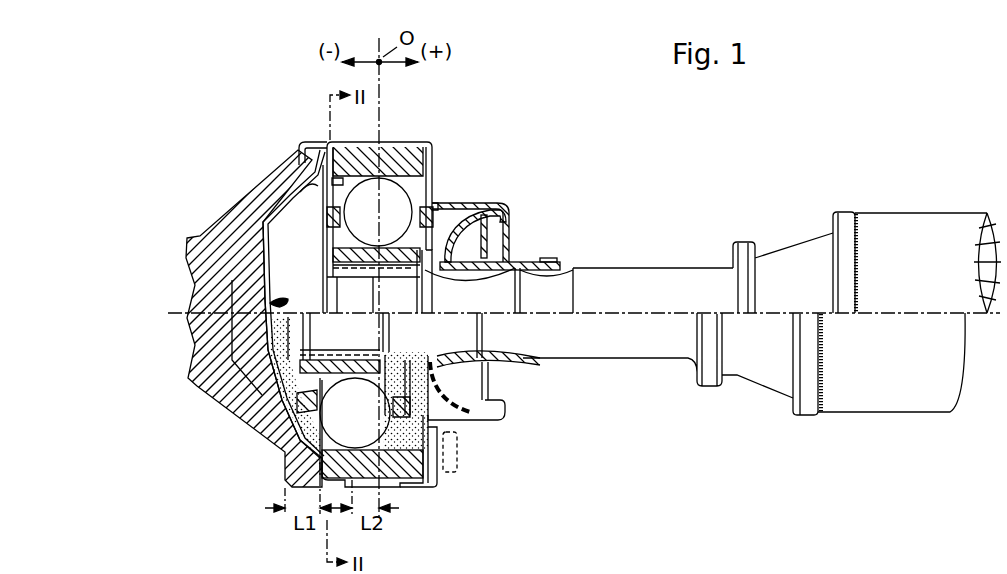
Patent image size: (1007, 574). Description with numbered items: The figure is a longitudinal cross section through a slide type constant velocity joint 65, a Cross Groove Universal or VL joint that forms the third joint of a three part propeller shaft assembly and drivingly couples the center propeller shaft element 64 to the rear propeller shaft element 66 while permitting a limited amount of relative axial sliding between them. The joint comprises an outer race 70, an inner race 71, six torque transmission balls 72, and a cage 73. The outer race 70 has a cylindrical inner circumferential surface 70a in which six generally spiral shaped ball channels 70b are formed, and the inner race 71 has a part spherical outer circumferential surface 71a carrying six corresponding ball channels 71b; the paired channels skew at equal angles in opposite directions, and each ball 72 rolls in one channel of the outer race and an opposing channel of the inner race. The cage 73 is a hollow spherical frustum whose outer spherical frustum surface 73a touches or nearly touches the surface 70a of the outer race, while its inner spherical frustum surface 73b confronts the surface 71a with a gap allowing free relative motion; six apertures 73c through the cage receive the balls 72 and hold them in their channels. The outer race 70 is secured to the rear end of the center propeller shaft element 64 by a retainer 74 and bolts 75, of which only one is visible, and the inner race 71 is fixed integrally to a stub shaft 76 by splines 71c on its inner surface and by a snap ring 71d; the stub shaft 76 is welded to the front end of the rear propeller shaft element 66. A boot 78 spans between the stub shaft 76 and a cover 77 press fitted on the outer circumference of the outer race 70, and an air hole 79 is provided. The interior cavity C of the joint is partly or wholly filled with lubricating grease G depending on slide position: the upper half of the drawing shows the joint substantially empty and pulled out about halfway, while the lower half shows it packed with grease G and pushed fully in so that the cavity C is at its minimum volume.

The center propeller shaft element 64 is at (255, 392).
The slide type constant velocity joint 65 is at (520, 150).
The rear propeller shaft element 66 is at (890, 232).
The outer race 70 is at (410, 155).
The cylindrical inner circumferential surface 70a is at (431, 185).
The ball channels 70b is at (323, 140).
The inner race 71 is at (333, 262).
The part spherical outer circumferential surface 71a is at (475, 245).
The ball channels 71b is at (327, 246).
The splines 71c is at (490, 264).
The snap ring 71d is at (320, 272).
The torque transmission balls 72 is at (385, 185).
The cage 73 is at (318, 212).
The outer spherical frustum surface 73a is at (438, 204).
The inner spherical frustum surface 73b is at (320, 193).
The apertures 73c is at (423, 152).
The retainer 74 is at (272, 300).
The bolts 75 is at (443, 478).
The stub shaft 76 is at (612, 282).
The cover 77 is at (473, 423).
The boot 78 is at (463, 403).
The air hole 79 is at (539, 272).
The interior cavity C is at (285, 300).
The lubricating grease G is at (280, 323).